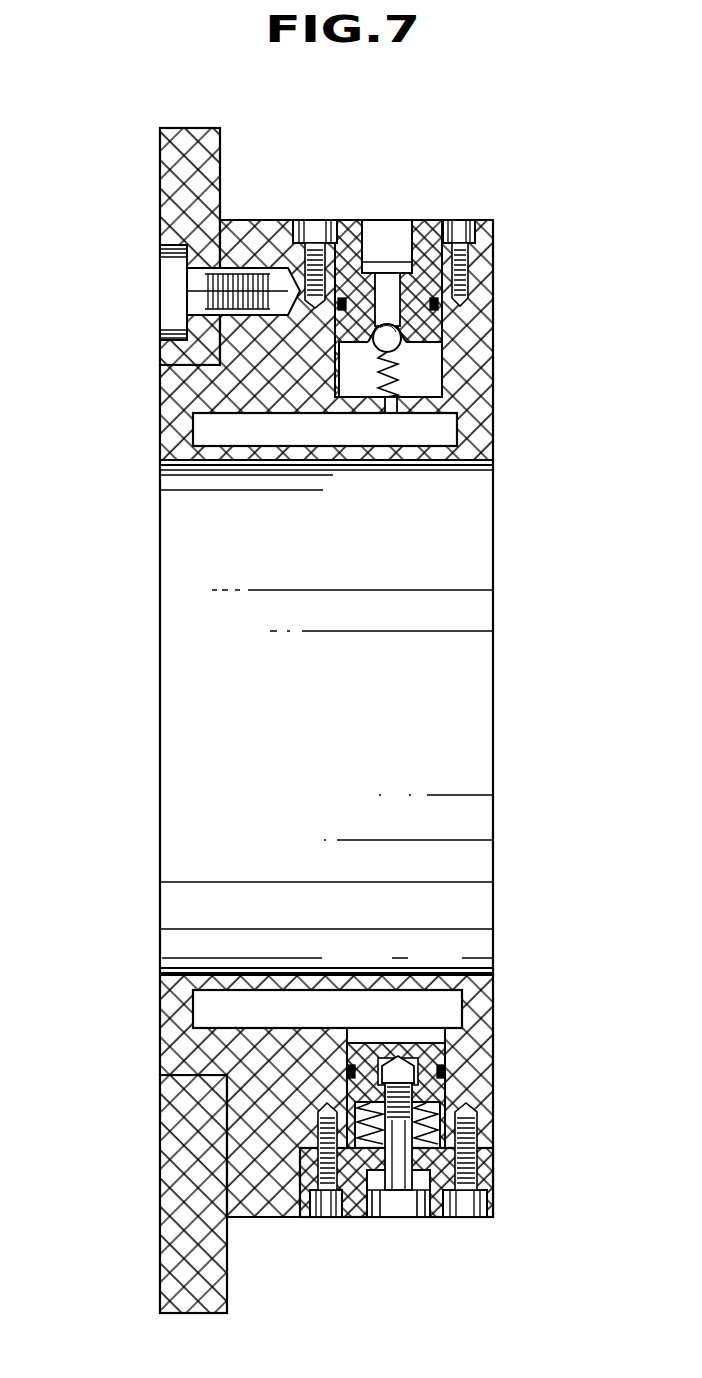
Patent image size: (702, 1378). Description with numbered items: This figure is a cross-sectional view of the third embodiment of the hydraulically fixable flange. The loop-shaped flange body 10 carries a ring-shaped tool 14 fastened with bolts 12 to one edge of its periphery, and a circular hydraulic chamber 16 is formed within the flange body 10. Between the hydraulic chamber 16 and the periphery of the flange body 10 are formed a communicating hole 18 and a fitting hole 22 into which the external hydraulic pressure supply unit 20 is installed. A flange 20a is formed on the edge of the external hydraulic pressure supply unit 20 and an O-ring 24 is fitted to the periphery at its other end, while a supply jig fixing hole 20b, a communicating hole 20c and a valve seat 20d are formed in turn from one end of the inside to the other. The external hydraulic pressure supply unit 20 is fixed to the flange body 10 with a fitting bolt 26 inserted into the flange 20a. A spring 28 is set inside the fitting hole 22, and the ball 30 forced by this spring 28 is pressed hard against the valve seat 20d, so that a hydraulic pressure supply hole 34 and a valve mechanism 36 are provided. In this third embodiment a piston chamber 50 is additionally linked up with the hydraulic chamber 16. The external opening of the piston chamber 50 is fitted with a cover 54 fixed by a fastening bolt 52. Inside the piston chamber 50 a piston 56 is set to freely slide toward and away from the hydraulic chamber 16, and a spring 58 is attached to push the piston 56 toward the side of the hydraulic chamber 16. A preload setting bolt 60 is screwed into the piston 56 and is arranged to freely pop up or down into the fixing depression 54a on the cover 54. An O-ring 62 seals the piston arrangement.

The flange body 10 is at (257, 240).
The bolt 12 is at (167, 289).
The ring-shaped tool 14 is at (167, 190).
The hydraulic chamber 16 is at (443, 428).
The communicating hole 18 is at (396, 408).
The external hydraulic pressure supply unit 20 is at (433, 232).
The flange 20a is at (484, 250).
The supply jig fixing hole 20b is at (380, 235).
The communicating hole 20c is at (388, 320).
The valve seat 20d is at (373, 345).
The fitting hole 22 is at (342, 365).
The O-ring 24 is at (438, 306).
The fitting bolt 26 is at (315, 228).
The spring 28 is at (400, 378).
The ball 30 is at (402, 343).
The hydraulic pressure supply hole 34 is at (428, 212).
The valve mechanism 36 is at (428, 368).
The piston chamber 50 is at (367, 1035).
The fastening bolt 52 is at (473, 1203).
The cover 54 is at (440, 1219).
The fixing depression 54a is at (427, 1205).
The piston 56 is at (428, 1052).
The spring 58 is at (428, 1110).
The preload setting bolt 60 is at (383, 1205).
The O-ring 62 is at (445, 1070).